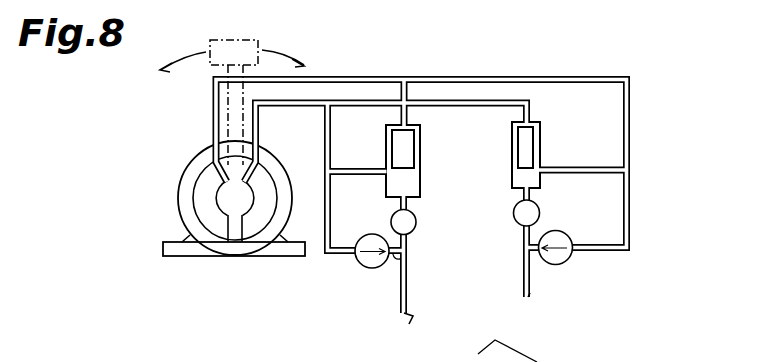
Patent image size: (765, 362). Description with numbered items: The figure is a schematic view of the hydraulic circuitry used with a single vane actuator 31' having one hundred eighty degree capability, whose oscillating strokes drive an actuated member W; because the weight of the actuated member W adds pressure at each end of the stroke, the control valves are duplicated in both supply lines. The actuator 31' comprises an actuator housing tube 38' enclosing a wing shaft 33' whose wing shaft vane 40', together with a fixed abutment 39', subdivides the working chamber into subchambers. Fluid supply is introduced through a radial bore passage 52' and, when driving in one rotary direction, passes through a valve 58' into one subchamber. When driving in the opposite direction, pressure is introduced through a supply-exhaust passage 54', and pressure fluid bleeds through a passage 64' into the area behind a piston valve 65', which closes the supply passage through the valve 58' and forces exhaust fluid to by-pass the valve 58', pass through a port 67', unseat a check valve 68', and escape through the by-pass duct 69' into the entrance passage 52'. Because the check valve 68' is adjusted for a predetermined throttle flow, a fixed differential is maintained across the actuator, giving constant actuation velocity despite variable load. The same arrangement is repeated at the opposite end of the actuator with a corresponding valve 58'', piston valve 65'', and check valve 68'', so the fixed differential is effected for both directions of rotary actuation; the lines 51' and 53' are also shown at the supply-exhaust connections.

The actuated member W is at (240, 36).
The actuator 31' is at (211, 206).
The wing shaft 33' is at (193, 209).
The actuator housing tube 38' is at (215, 193).
The abutment 39' is at (421, 164).
The wing shaft vane 40' is at (243, 260).
The passage 64' is at (431, 87).
The piston valve 65' is at (430, 161).
The piston valve 65'' is at (552, 155).
The port 67' is at (357, 177).
The valve 58' is at (431, 217).
The valve 58'' is at (559, 205).
The check valve 68' is at (349, 269).
The check valve 68'' is at (594, 259).
The by-pass duct 69' is at (421, 269).
The line end 51' is at (404, 336).
The radial bore passage 52' is at (373, 258).
The conduit 53' is at (506, 256).
The supply-exhaust passage 54' is at (562, 301).